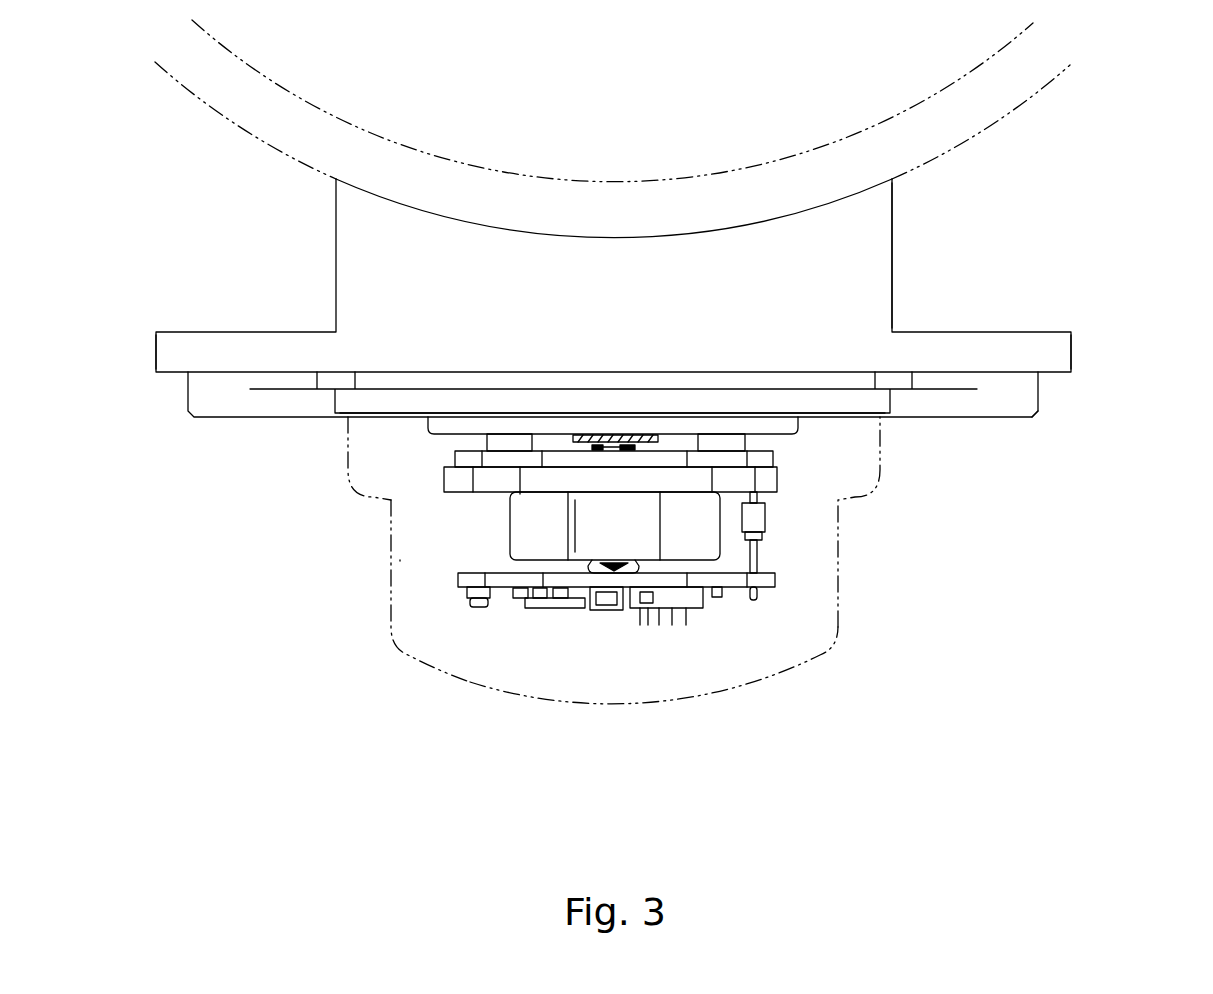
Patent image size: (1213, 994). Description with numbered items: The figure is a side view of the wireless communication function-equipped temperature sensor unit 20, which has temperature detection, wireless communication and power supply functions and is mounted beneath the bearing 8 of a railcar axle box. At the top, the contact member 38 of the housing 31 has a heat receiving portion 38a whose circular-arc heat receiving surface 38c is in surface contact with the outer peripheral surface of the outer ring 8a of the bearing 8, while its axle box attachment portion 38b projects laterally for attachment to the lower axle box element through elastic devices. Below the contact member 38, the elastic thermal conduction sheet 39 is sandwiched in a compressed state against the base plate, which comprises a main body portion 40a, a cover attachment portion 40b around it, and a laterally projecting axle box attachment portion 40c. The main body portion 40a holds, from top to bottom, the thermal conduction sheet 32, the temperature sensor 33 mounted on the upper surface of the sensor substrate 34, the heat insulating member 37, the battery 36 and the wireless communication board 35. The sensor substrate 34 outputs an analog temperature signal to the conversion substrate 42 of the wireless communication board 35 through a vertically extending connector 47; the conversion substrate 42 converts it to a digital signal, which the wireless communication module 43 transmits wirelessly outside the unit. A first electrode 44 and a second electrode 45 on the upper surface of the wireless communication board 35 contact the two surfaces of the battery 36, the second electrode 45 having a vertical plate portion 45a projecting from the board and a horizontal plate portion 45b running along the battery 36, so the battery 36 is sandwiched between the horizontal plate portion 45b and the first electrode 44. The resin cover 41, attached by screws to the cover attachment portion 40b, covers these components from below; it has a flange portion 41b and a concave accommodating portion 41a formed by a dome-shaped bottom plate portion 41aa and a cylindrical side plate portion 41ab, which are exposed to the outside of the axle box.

The bearing 8 is at (1048, 82).
The outer ring 8a is at (1000, 108).
The temperature sensor unit 20 is at (745, 697).
The housing 31 is at (1010, 418).
The thermal conduction sheet 32 is at (568, 438).
The temperature sensor 33 is at (635, 433).
The sensor substrate 34 is at (777, 455).
The wireless communication board 35 is at (775, 582).
The battery 36 is at (688, 545).
The heat insulating member 37 is at (440, 478).
The contact member 38 is at (672, 206).
The heat receiving portion 38a is at (867, 225).
The axle box attachment portion 38b is at (1071, 346).
The heat receiving surface 38c is at (465, 222).
The thermal conduction sheet 39 is at (805, 366).
The main body portion 40a is at (683, 400).
The cover attachment portion 40b is at (847, 417).
The axle box attachment portion 40c is at (1040, 396).
The cover 41 is at (580, 604).
The accommodating portion 41a is at (828, 648).
The bottom plate portion 41aa is at (463, 677).
The side plate portion 41ab is at (843, 600).
The flange portion 41b is at (347, 432).
The conversion substrate 42 is at (457, 586).
The wireless communication module 43 is at (478, 607).
The first electrode 44 is at (617, 567).
The second electrode 45 is at (509, 672).
The vertical plate portion 45a is at (582, 535).
The horizontal plate portion 45b is at (583, 483).
The connector 47 is at (768, 515).